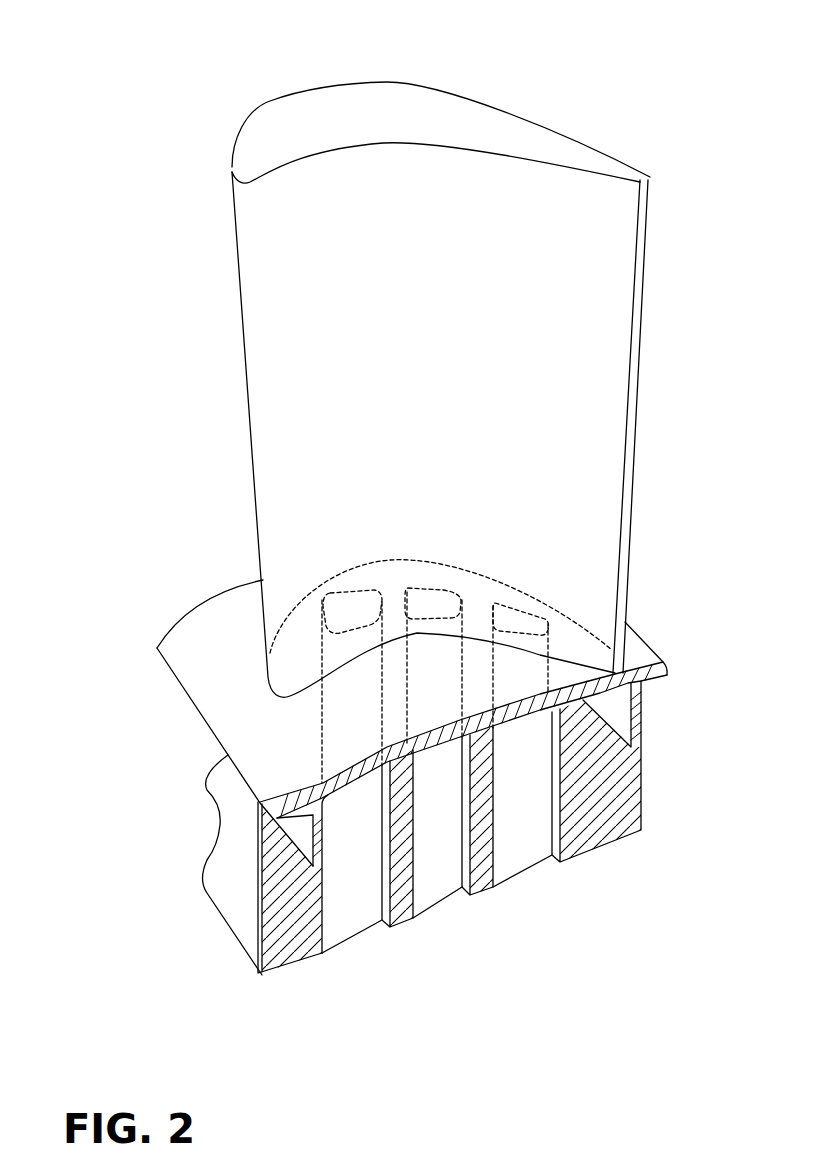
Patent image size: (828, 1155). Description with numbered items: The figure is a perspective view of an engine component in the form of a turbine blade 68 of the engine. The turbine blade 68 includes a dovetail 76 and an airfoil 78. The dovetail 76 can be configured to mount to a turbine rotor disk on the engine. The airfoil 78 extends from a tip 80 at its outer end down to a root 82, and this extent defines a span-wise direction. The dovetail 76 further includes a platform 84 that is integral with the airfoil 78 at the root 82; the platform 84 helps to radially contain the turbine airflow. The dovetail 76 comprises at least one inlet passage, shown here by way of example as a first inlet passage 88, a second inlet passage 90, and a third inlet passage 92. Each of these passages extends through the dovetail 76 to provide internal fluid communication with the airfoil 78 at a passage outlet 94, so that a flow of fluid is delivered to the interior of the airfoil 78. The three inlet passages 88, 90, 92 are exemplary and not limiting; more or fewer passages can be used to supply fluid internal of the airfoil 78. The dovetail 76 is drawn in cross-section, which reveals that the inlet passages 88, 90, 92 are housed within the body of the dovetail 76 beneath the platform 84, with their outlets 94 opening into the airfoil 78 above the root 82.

The turbine blade 68 is at (87, 181).
The dovetail 76 is at (247, 853).
The airfoil 78 is at (238, 465).
The tip 80 is at (323, 123).
The root 82 is at (577, 650).
The platform 84 is at (227, 685).
The first inlet passage 88 is at (358, 962).
The second inlet passage 90 is at (443, 942).
The third inlet passage 92 is at (522, 909).
The passage outlet 94 is at (322, 595).